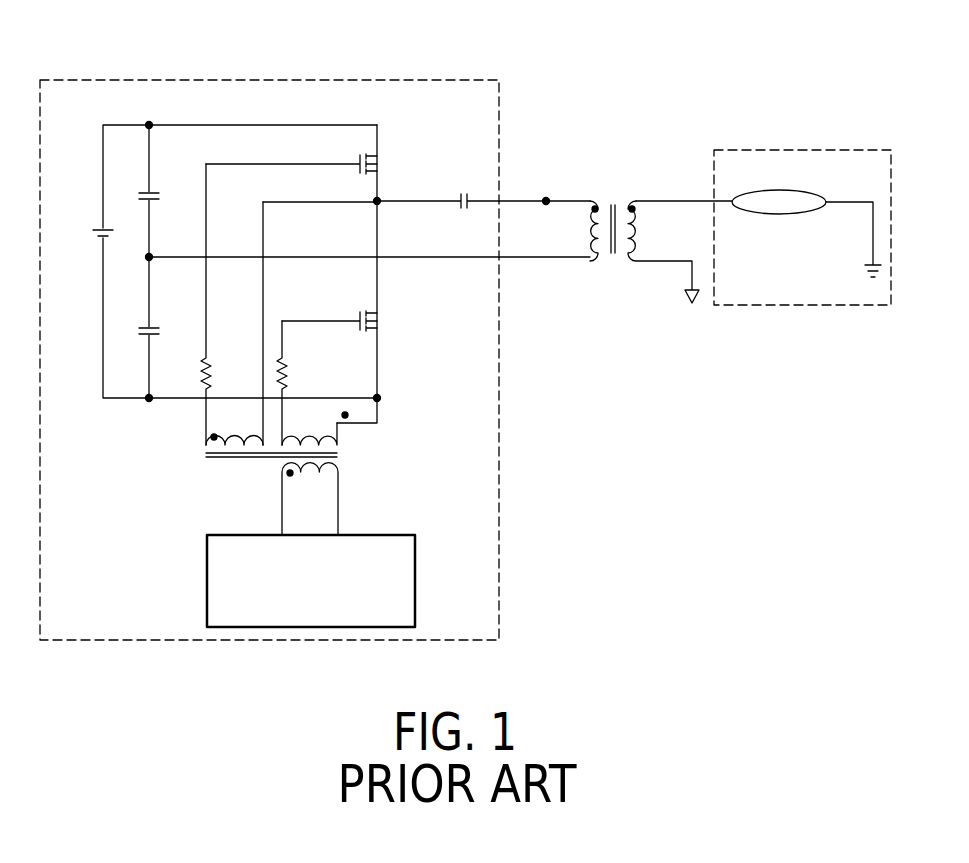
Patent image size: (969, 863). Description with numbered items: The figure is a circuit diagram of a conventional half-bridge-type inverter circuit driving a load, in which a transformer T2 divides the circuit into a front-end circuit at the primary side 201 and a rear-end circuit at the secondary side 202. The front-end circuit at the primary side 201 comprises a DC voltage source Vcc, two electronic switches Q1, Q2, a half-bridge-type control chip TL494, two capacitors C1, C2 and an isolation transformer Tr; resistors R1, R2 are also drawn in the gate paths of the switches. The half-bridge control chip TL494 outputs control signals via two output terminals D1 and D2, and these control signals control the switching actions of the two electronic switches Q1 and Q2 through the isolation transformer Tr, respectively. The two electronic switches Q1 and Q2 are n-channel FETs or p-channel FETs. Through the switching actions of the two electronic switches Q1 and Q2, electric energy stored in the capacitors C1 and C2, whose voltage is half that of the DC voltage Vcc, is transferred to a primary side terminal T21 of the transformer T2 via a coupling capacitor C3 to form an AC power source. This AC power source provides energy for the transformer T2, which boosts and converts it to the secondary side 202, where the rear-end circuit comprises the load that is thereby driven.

The primary side 201 is at (433, 80).
The secondary side 202 is at (800, 150).
The DC voltage source Vcc is at (80, 232).
The capacitor C1 is at (140, 186).
The capacitor C2 is at (140, 319).
The coupling capacitor C3 is at (483, 190).
The electronic switch Q1 is at (308, 166).
The electronic switch Q2 is at (346, 323).
The resistor R1 is at (221, 304).
The resistor R2 is at (297, 383).
The isolation transformer Tr is at (284, 473).
The transformer T2 is at (661, 236).
The primary side terminal T21 is at (546, 200).
The output terminal D1 is at (269, 523).
The output terminal D2 is at (356, 523).
The half-bridge-type control chip TL494 is at (346, 581).
The element load is at (806, 220).